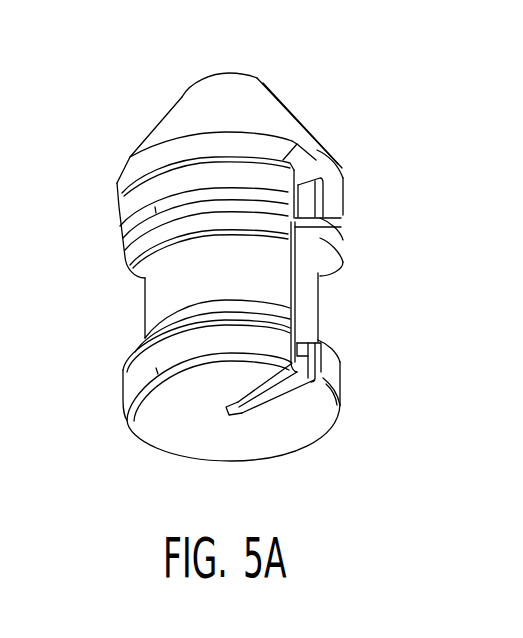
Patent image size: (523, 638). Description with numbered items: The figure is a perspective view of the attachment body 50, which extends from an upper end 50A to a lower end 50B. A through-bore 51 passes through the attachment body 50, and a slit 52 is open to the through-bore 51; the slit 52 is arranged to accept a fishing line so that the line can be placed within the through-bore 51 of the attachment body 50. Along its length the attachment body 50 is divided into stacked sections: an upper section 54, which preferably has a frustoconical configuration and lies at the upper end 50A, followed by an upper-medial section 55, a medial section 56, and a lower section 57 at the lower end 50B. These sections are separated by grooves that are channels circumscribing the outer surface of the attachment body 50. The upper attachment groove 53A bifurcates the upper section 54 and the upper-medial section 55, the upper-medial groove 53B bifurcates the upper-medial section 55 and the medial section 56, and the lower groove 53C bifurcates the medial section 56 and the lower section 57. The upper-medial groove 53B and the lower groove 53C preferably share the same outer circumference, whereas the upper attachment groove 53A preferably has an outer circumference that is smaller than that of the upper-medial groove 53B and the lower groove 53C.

The attachment body 50 is at (376, 72).
The upper end 50A is at (214, 46).
The lower end 50B is at (173, 472).
The through-bore 51 is at (238, 430).
The slit 52 is at (313, 355).
The upper attachment groove 53A is at (136, 166).
The upper-medial groove 53B is at (144, 240).
The lower groove 53C is at (154, 316).
The upper section 54 is at (188, 100).
The upper-medial section 55 is at (325, 204).
The medial section 56 is at (307, 290).
The lower section 57 is at (230, 428).